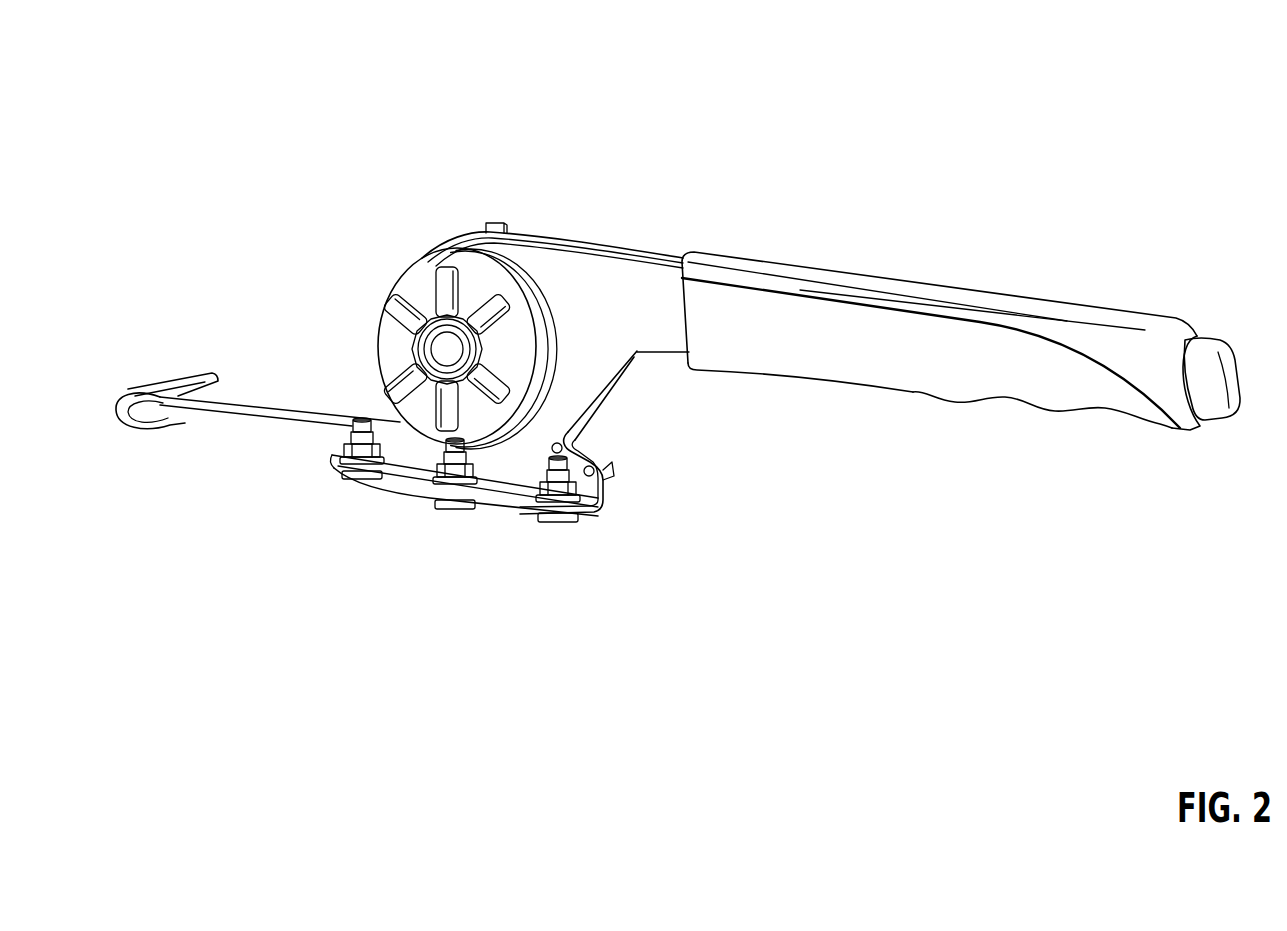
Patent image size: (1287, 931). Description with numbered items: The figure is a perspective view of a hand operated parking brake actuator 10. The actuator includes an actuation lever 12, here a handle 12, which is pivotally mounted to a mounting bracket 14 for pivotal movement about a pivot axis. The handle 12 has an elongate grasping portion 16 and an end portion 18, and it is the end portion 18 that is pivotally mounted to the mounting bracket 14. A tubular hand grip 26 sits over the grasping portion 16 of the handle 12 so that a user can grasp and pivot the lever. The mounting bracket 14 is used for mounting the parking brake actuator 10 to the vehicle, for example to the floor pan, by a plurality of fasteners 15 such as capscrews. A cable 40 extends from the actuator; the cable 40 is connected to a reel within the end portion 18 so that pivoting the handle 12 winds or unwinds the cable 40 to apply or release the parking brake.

The parking brake actuator 10 is at (831, 132).
The actuation lever 12 is at (613, 270).
The mounting bracket 14 is at (597, 477).
The fasteners 15 is at (553, 497).
The grasping portion 16 is at (636, 330).
The end portion 18 is at (424, 275).
The hand grip 26 is at (912, 392).
The cable 40 is at (340, 414).